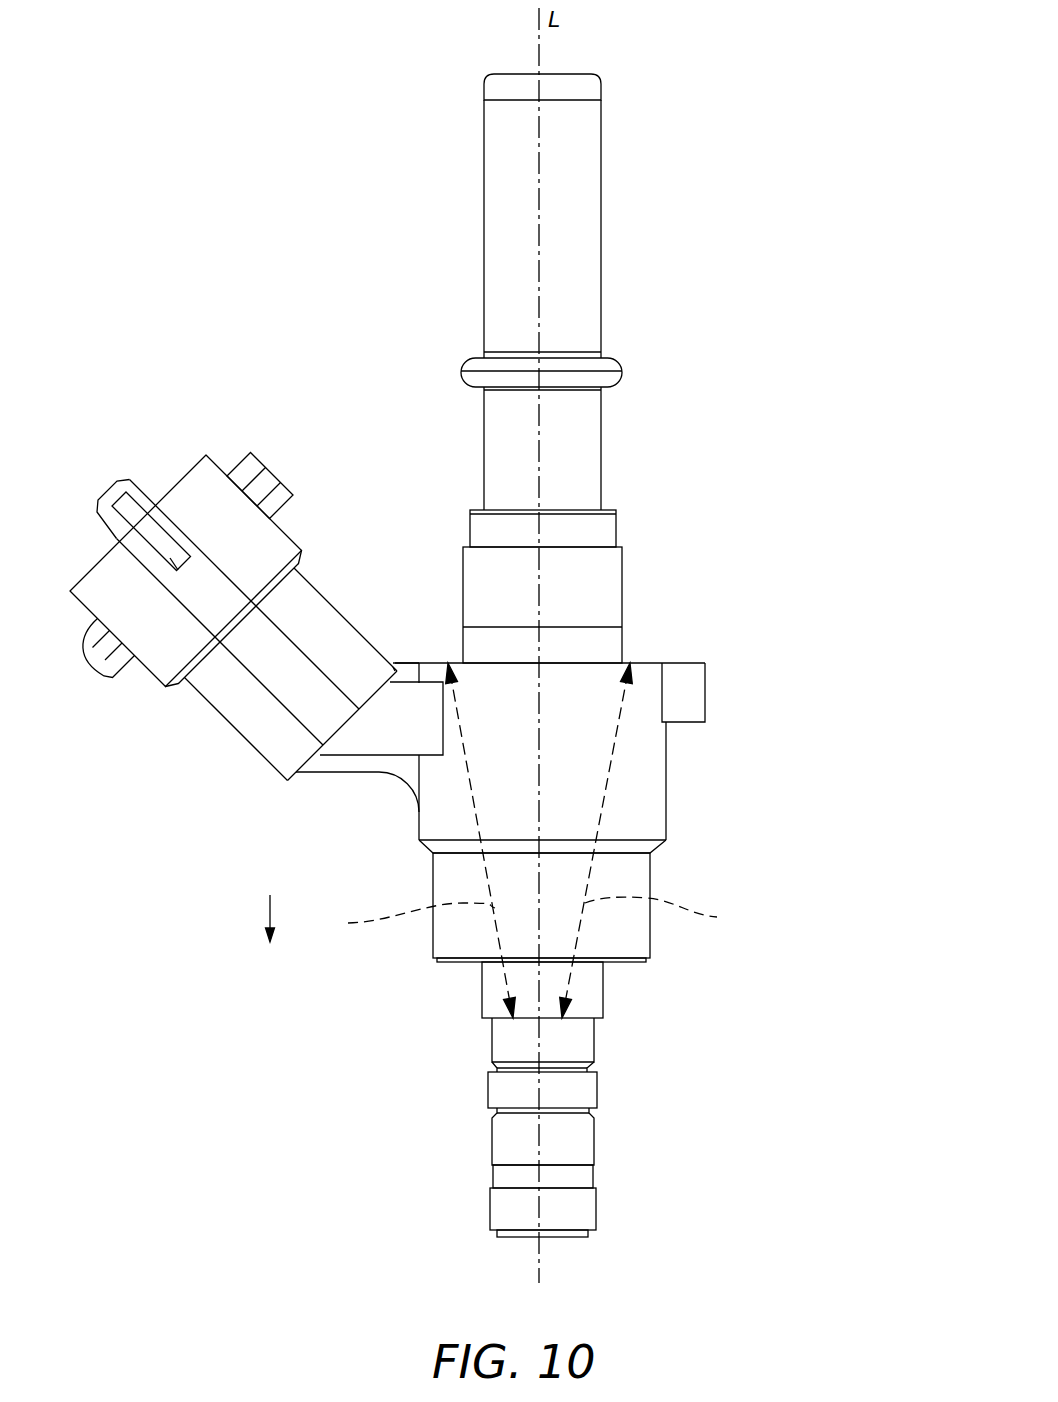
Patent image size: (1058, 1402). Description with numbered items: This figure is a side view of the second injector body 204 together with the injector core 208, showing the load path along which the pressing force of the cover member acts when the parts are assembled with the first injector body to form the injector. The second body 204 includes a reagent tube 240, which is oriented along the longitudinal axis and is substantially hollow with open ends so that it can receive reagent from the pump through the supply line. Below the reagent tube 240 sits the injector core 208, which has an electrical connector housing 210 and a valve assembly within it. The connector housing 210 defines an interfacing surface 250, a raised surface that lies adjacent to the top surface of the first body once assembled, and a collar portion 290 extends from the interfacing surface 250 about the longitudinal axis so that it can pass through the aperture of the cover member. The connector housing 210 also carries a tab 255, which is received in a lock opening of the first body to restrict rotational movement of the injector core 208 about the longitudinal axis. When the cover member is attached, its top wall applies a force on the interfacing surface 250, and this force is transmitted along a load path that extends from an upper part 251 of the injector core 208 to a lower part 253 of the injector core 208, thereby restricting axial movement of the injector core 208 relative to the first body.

The second injector body 204 is at (421, 80).
The injector core 208 is at (57, 463).
The electrical connector housing 210 is at (185, 478).
The reagent tube 240 is at (484, 211).
The interfacing surface 250 is at (647, 663).
The upper part of the injector core 251 is at (778, 663).
The lower part of the injector core 253 is at (778, 853).
The tab 255 is at (705, 696).
The collar portion 290 is at (463, 643).